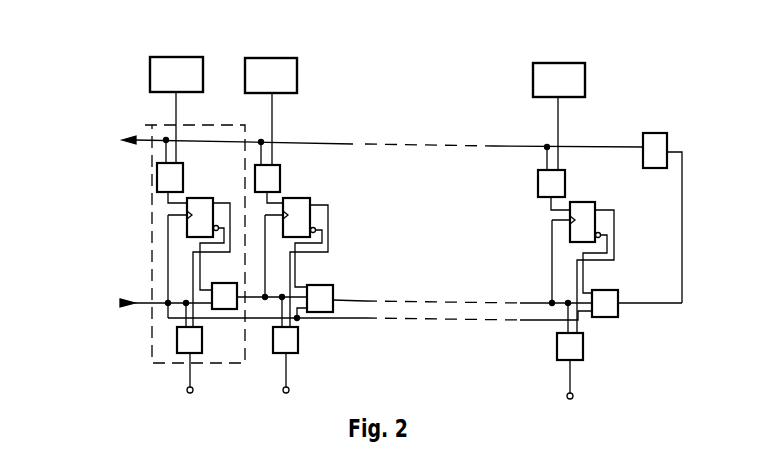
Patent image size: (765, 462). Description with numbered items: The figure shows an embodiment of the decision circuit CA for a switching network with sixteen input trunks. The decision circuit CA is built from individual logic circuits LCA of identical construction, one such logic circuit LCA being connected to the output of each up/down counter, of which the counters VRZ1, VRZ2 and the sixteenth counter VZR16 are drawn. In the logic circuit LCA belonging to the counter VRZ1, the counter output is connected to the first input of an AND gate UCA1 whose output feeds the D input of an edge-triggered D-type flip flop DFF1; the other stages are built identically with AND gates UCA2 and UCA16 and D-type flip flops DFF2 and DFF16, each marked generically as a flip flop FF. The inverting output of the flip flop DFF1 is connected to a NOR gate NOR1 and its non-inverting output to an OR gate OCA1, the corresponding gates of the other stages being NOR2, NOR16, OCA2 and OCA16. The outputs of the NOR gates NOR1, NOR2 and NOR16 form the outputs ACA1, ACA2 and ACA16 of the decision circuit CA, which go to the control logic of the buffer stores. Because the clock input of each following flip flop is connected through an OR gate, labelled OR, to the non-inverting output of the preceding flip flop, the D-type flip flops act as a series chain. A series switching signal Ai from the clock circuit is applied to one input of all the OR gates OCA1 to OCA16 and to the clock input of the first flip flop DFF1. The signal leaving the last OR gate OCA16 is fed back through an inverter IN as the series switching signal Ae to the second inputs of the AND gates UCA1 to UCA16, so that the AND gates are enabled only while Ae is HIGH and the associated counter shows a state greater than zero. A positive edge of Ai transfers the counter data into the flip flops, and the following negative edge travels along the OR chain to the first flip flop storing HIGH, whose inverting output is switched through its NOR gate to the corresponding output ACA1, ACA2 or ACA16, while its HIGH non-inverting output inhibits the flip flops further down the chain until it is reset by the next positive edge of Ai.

The series switching signal Ae is at (382, 130).
The series switching signal Ai is at (166, 290).
The decision circuit CA is at (448, 231).
The logic circuit LCA is at (163, 358).
The up/down counter VRZ1 is at (183, 57).
The up/down counter VRZ2 is at (255, 58).
The up/down counter VZR16 is at (577, 63).
The AND gate UCA1 is at (183, 170).
The AND gate UCA2 is at (280, 170).
The AND gate UCA16 is at (565, 176).
The edge-triggered D-type flip flop DFF1 is at (198, 198).
The edge-triggered D-type flip flop DFF2 is at (293, 198).
The edge-triggered D-type flip flop DFF16 is at (590, 196).
The flip flop FF is at (186, 226).
The OR gate OCA1 is at (220, 283).
The OR gate OCA2 is at (318, 285).
The OR gate OCA16 is at (600, 290).
The OR gate OR is at (213, 285).
The NOR gate NOR1 is at (210, 352).
The NOR gate NOR2 is at (306, 352).
The NOR gate NOR16 is at (593, 362).
The output of the decision circuit ACA1 is at (211, 376).
The output of the decision circuit ACA2 is at (308, 376).
The output of the decision circuit ACA16 is at (596, 382).
The inverter IN is at (662, 202).